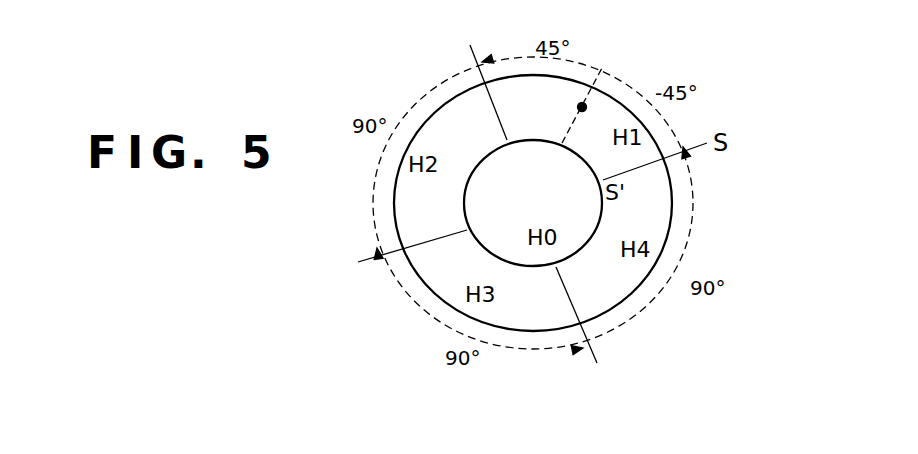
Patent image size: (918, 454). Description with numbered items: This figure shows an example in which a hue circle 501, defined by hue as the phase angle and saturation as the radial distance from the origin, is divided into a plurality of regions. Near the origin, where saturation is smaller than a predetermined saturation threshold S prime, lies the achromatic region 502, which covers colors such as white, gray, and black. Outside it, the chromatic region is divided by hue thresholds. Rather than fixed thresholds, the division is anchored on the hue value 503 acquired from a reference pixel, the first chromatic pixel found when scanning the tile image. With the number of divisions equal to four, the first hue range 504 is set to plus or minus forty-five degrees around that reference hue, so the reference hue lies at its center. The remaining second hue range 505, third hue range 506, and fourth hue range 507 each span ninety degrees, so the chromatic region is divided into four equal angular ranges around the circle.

The hue circle 501 is at (558, 381).
The achromatic region 502 is at (483, 212).
The hue value of reference pixel 503 is at (586, 105).
The hue range H1 504 is at (648, 123).
The hue range H2 505 is at (448, 100).
The hue range H3 506 is at (420, 283).
The hue range H4 507 is at (673, 215).